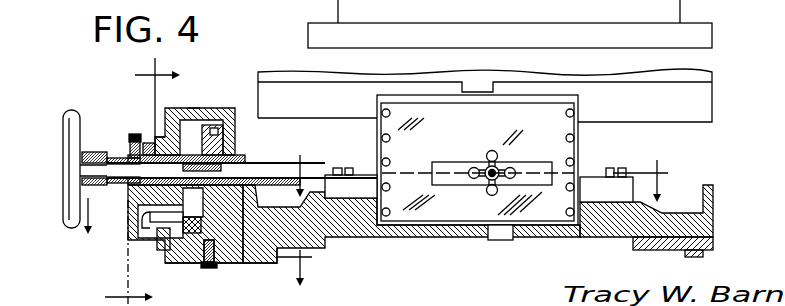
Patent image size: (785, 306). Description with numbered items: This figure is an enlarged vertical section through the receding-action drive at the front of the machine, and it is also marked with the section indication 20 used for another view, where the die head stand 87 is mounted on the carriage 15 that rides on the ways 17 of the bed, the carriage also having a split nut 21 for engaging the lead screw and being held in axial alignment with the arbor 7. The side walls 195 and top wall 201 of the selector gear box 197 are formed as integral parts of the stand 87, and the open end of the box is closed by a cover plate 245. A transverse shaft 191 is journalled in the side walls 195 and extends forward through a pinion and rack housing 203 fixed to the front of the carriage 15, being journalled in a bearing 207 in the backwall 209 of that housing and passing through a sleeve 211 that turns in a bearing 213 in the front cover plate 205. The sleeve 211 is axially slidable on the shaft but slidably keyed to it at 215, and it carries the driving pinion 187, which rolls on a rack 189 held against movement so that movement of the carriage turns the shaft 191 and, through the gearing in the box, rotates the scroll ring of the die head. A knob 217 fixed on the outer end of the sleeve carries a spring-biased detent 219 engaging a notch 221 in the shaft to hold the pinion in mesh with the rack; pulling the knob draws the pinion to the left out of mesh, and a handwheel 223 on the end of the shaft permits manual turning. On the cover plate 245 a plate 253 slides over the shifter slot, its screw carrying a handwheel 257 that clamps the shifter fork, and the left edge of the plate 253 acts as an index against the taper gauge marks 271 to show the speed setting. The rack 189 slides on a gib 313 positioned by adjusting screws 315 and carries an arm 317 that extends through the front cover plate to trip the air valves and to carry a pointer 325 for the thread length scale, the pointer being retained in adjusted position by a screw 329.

The arbor 7 is at (482, 172).
The carriage 15 is at (345, 235).
The ways 17 is at (278, 257).
The section line 20- 20 is at (142, 181).
The split nut 21 is at (197, 252).
The stand 87 is at (693, 112).
The driving pinion 187 is at (208, 108).
The rack 189 is at (197, 253).
The shaft 191 is at (340, 167).
The side walls 195 is at (375, 127).
The selector gear box 197 is at (586, 111).
The top wall 201 is at (393, 96).
The pinion and rack housing 203 is at (196, 107).
The front cover plate 205 is at (157, 135).
The bearing 207 is at (243, 161).
The backwall 209 is at (240, 158).
The sleeve 211 is at (128, 188).
The bearing 213 is at (163, 140).
The key 215 is at (236, 130).
The knob 217 is at (147, 143).
The spring-biased detent 219 is at (128, 148).
The notch 221 is at (126, 160).
The handwheel 223 is at (70, 226).
The cover plate 245 is at (543, 203).
The plate 253 is at (535, 160).
The handwheel 257 is at (490, 150).
The taper gauge marks 271 is at (436, 135).
The gib 313 is at (205, 265).
The adjusting screws 315 is at (220, 270).
The arm 317 is at (158, 243).
The pointer 325 is at (148, 214).
The screw 329 is at (137, 228).